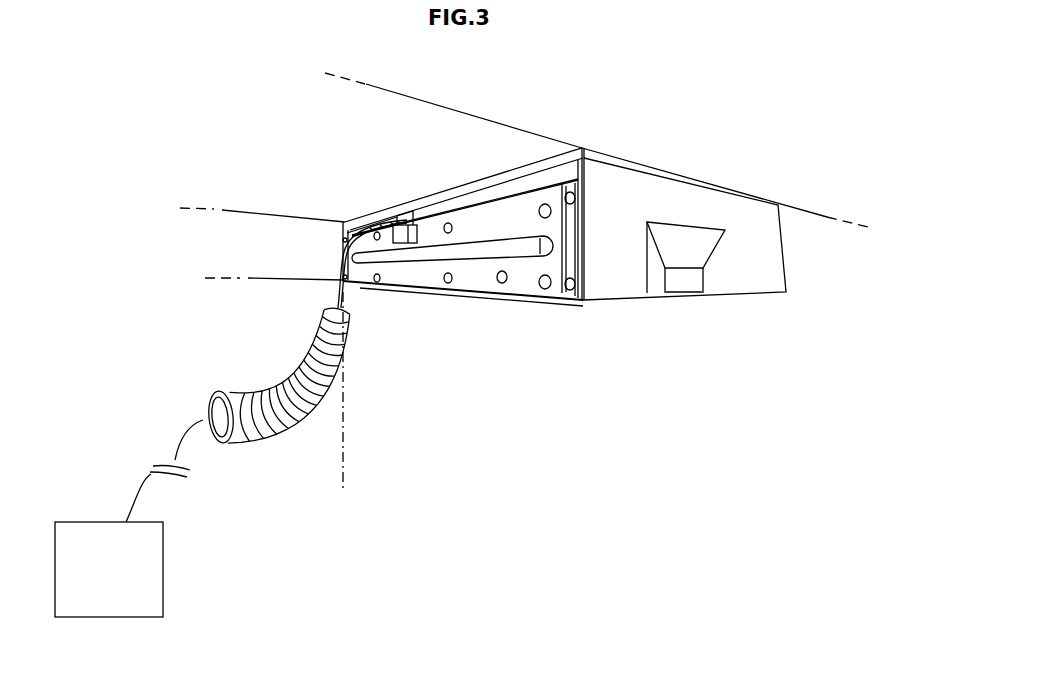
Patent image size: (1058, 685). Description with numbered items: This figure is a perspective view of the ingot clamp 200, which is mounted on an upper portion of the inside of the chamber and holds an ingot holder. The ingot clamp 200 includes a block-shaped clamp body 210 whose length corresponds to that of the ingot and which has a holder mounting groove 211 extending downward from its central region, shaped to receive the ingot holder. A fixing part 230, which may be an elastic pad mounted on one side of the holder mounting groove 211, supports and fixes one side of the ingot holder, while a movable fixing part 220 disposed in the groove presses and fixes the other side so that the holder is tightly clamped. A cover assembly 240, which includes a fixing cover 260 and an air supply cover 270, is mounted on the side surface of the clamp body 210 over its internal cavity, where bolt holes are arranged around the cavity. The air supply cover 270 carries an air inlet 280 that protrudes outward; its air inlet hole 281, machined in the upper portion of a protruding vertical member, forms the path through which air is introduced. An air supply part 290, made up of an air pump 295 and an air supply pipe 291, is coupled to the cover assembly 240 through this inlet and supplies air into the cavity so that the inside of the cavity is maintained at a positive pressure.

The ingot clamp 200 is at (322, 248).
The clamp body 210 is at (727, 211).
The holder mounting groove 211 is at (690, 288).
The movable fixing part 220 is at (660, 288).
The fixing part 230 is at (712, 250).
The cover assembly 240 is at (531, 306).
The fixing cover 260 is at (587, 250).
The air supply cover 270 is at (478, 276).
The air inlet 280 is at (420, 263).
The air inlet hole 281 is at (404, 217).
The air supply part 290 is at (303, 592).
The air supply pipe 291 is at (293, 443).
The air pump 295 is at (163, 555).